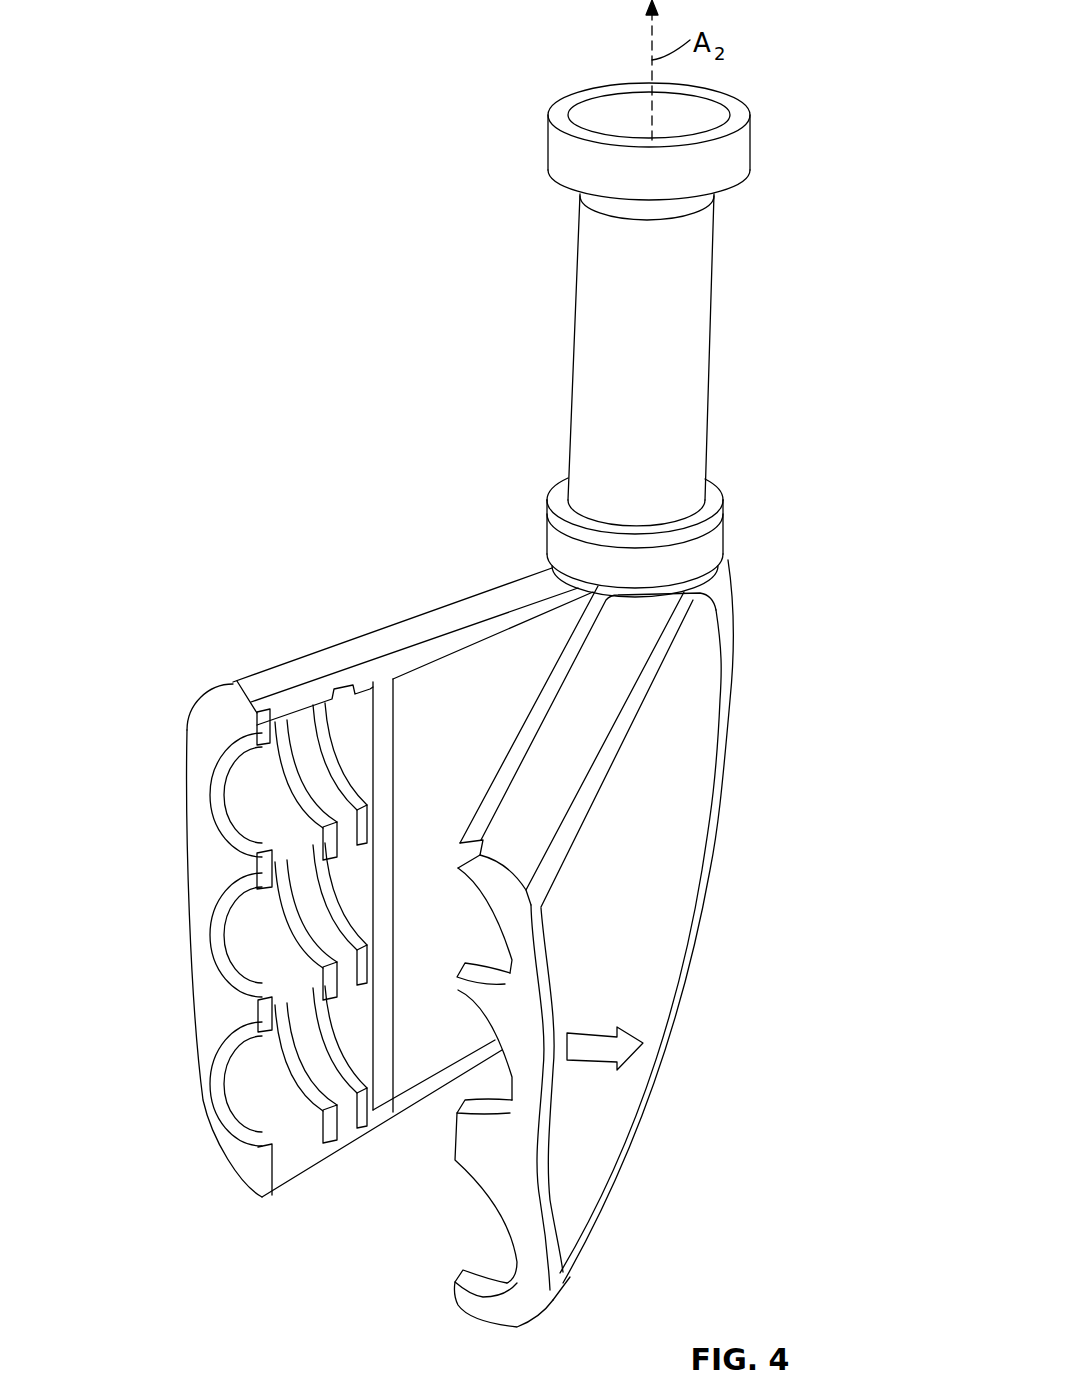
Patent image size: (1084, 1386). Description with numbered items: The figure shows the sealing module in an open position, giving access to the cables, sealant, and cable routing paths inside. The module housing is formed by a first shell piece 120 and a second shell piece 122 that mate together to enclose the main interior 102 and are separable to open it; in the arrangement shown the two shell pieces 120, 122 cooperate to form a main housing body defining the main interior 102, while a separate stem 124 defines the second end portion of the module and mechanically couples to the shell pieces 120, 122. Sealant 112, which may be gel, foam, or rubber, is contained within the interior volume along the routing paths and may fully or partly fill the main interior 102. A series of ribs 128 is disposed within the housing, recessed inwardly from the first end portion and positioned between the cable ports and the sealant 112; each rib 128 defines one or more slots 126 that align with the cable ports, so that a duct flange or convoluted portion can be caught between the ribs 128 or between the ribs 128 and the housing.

The main interior 102 is at (455, 692).
The sealant 112 is at (433, 762).
The first shell piece 120 is at (325, 652).
The second shell piece 122 is at (650, 1122).
The stem 124 is at (712, 353).
The slots 126 is at (267, 797).
The ribs 128 is at (227, 783).